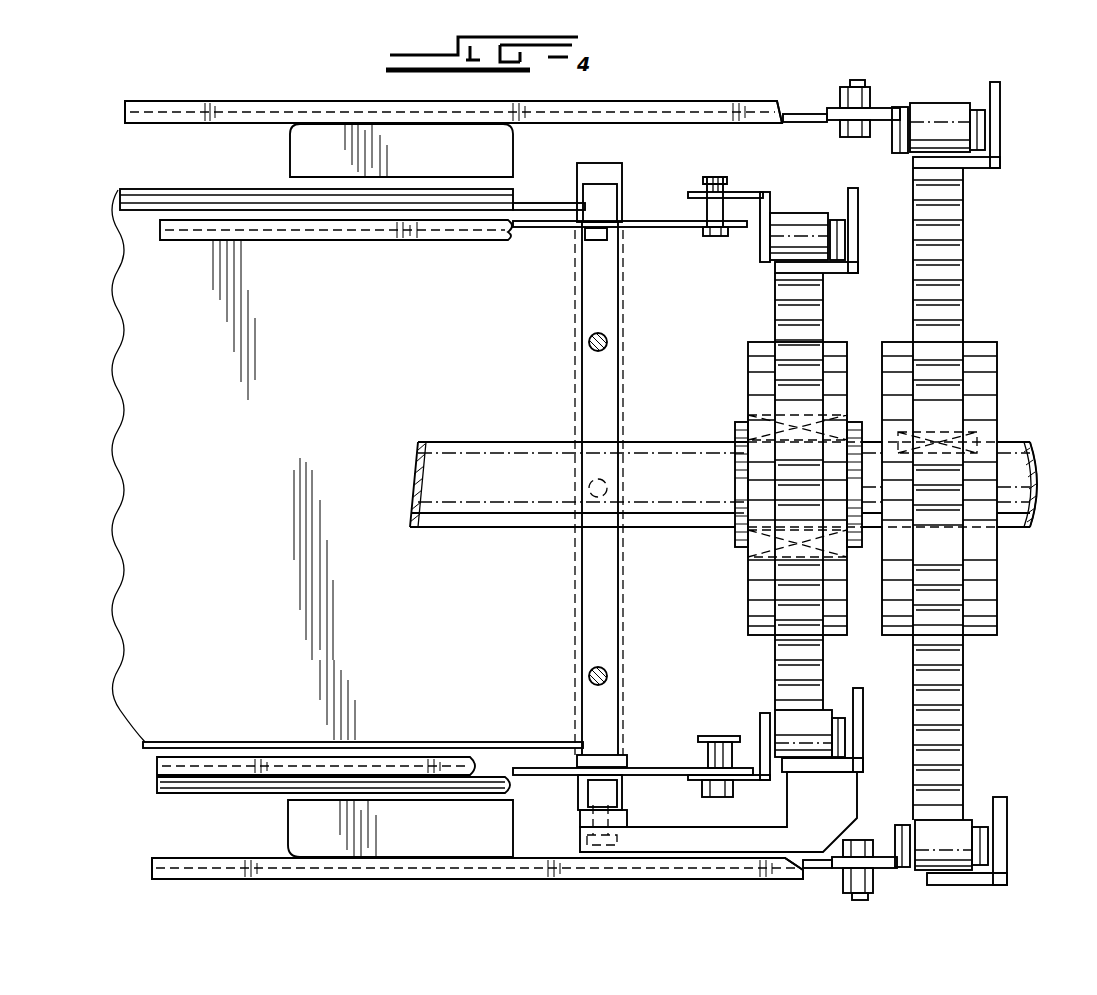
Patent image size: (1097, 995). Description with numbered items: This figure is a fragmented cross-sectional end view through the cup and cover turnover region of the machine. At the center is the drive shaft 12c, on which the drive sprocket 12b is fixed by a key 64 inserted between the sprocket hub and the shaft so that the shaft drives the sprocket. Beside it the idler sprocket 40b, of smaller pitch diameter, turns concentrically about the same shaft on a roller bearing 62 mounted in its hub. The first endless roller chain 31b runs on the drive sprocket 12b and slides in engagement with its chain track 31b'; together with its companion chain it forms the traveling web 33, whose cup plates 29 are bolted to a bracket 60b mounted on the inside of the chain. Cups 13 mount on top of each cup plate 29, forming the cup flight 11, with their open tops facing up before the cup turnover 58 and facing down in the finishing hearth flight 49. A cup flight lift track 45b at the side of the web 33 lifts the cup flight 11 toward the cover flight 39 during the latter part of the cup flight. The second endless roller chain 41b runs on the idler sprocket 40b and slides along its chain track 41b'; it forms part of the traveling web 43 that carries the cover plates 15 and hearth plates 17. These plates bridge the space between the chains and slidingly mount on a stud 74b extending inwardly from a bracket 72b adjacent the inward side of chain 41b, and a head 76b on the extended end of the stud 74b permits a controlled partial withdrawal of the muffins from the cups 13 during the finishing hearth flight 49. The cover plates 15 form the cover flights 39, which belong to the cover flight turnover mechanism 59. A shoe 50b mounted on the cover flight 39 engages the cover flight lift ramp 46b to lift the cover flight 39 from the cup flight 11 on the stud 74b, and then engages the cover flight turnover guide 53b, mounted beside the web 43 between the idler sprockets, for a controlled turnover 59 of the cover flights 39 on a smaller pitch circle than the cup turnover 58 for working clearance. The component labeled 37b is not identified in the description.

The cup flight 11 is at (704, 95).
The traveling web 33 is at (300, 98).
The cups 13 is at (443, 159).
The cup plates 29 is at (673, 118).
The roller bearings 62 is at (513, 197).
The finishing hearth flight 49 is at (210, 246).
The hearth plates 17 is at (521, 212).
The shoe 50b is at (604, 205).
The cover flight lift ramp 46b is at (624, 817).
The cover flight turnover guide 53b is at (624, 395).
The cover flight turnover mechanism 59 is at (514, 557).
The drive shaft 12c is at (1027, 474).
The cup turnover 58 is at (1023, 538).
The idler sprocket 40b is at (802, 309).
The drive sprocket 12b is at (948, 305).
The keys 64 is at (915, 448).
The bracket 72b is at (743, 186).
The stud 74b is at (740, 246).
The head 76b is at (729, 238).
The second endless traveling chain 41b is at (816, 480).
The chain track 41b' is at (822, 781).
The bracket 60b is at (900, 117).
The bearing 37b is at (938, 111).
The first endless traveling chain 31b is at (961, 852).
The chain track 31b' is at (967, 890).
The cup flight lift track 45b is at (1007, 858).
The cover flights 39 is at (255, 726).
The traveling web 43 is at (378, 766).
The cover plates 15 is at (290, 779).